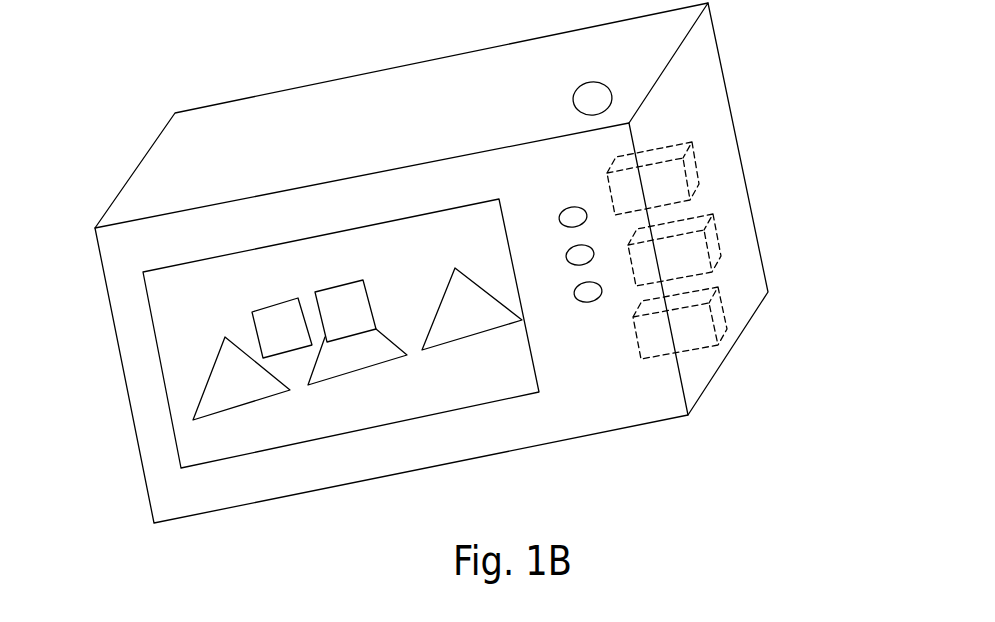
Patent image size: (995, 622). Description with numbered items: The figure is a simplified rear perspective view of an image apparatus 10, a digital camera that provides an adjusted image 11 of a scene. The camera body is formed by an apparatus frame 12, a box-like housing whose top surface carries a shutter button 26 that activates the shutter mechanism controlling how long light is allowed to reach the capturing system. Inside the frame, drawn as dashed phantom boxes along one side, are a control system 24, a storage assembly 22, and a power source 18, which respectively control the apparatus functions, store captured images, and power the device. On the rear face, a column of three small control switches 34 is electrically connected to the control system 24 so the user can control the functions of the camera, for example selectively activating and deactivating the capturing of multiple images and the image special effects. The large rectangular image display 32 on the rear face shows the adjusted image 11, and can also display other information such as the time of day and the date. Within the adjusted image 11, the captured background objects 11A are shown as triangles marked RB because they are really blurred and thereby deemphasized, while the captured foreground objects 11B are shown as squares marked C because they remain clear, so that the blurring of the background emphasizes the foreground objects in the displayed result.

The image apparatus 10 is at (176, 100).
The apparatus frame 12 is at (315, 103).
The shutter button 26 is at (597, 95).
The control system 24 is at (697, 173).
The storage assembly 22 is at (710, 237).
The power source 18 is at (723, 317).
The control switches 34 is at (594, 319).
The image display 32 is at (134, 325).
The adjusted image 11 is at (272, 381).
The captured background objects 11A is at (196, 413).
The captured foreground objects 11B is at (258, 317).